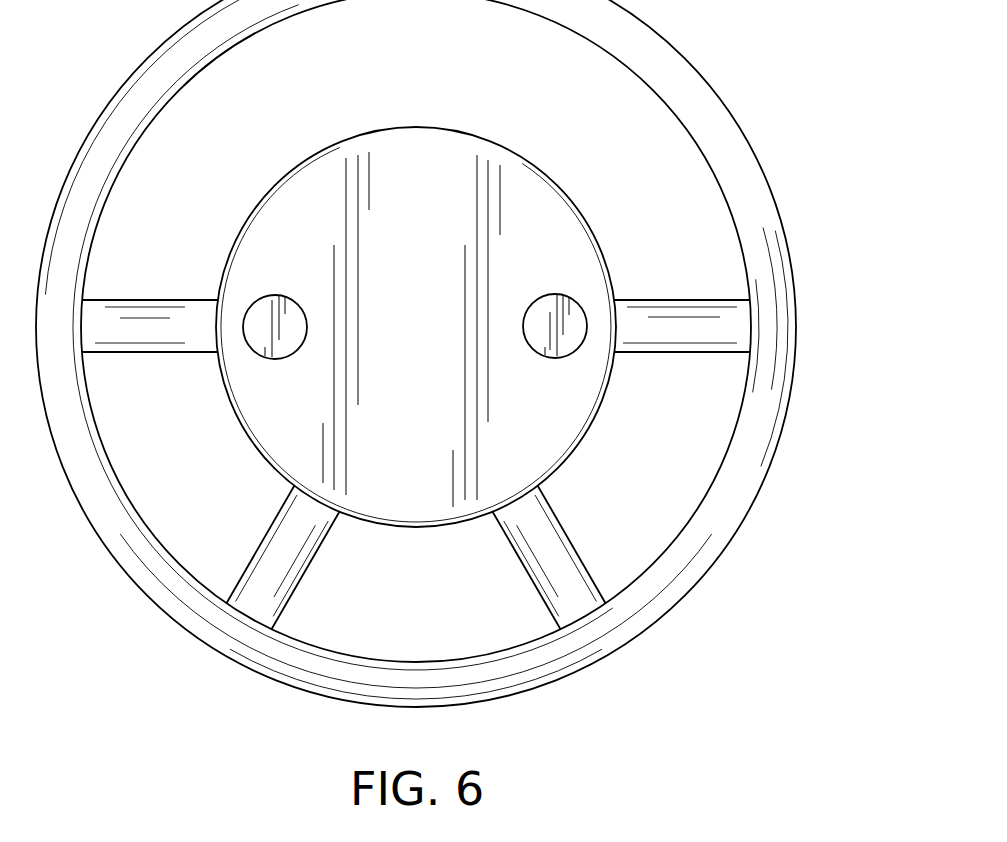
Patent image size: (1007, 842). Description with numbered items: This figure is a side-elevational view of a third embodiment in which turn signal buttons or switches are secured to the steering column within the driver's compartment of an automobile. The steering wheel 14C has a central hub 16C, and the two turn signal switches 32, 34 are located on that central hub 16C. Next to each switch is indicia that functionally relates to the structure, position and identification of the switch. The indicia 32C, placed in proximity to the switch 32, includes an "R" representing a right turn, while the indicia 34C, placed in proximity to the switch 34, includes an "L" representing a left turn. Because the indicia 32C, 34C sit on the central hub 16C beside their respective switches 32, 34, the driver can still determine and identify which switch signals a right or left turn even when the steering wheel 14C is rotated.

The steering wheel 14C is at (796, 375).
The central hub 16C is at (419, 127).
The indicia 32C is at (574, 258).
The indicia 34C is at (260, 257).
The switch 32 is at (555, 359).
The switch 34 is at (273, 360).